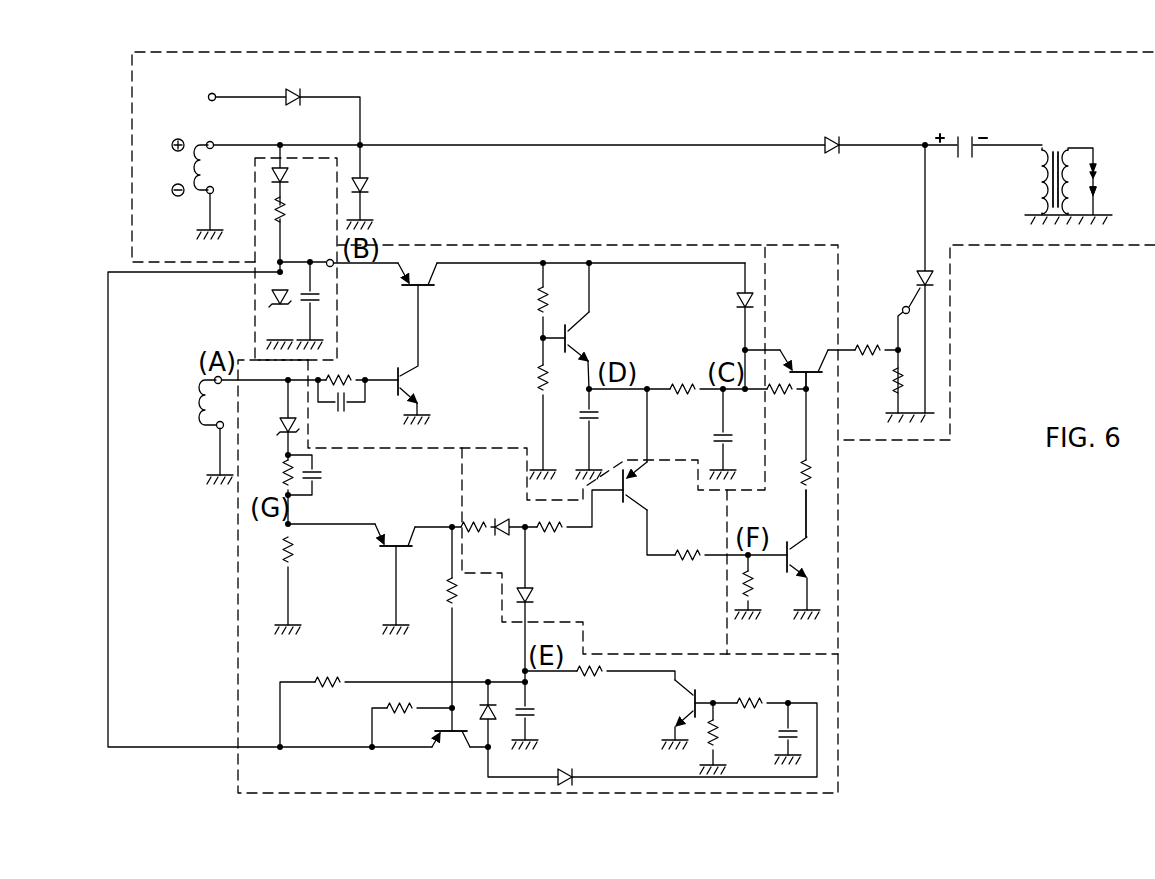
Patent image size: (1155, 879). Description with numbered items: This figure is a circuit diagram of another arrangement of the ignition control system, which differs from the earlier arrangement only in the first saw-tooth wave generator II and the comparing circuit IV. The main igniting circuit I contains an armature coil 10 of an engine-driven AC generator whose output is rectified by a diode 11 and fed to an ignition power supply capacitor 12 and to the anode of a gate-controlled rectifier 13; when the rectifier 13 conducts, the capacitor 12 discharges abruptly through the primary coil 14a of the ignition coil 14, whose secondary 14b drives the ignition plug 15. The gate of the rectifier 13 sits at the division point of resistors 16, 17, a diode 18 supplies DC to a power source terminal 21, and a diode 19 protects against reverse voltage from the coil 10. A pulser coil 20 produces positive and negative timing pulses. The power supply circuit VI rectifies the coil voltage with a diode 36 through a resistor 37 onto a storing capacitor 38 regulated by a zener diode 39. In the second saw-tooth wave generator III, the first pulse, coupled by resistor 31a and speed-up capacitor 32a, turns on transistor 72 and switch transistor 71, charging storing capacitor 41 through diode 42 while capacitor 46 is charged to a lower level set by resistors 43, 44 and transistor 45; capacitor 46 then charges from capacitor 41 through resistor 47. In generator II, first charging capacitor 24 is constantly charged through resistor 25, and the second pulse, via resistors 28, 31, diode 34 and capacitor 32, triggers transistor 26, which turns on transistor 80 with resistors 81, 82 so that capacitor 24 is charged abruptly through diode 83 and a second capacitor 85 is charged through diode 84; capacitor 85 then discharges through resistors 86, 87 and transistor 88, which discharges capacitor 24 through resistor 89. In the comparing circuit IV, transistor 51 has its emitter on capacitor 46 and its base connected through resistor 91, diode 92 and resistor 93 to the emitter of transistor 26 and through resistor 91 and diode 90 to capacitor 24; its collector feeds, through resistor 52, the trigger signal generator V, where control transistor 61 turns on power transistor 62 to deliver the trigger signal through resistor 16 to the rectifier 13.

The armature coil 10 is at (192, 170).
The diode 11 is at (833, 138).
The ignition power supply capacitor 12 is at (965, 137).
The gate-controlled rectifier 13 is at (916, 282).
The ignition coil 14 is at (1056, 152).
The primary coil 14a is at (1040, 184).
The secondary winding 14b is at (1073, 198).
The ignition plug 15 is at (1098, 186).
The resistor 16 is at (872, 344).
The resistor 17 is at (905, 383).
The diode 18 is at (290, 91).
The diode 19 is at (370, 185).
The pulser coil 20 is at (197, 406).
The power source terminal 21 is at (208, 98).
The first charging capacitor 24 is at (538, 712).
The resistor 25 is at (330, 677).
The transistor 26 is at (395, 532).
The resistor 28 is at (297, 552).
The resistor 31 is at (282, 475).
The resistor 31a is at (345, 375).
The capacitor 32 is at (322, 476).
The speed-up capacitor 32a is at (343, 412).
The diode 34 is at (280, 425).
The diode 36 is at (290, 176).
The resistor 37 is at (290, 211).
The storing capacitor 38 is at (326, 298).
The zener diode 39 is at (268, 305).
The storing capacitor 41 is at (714, 437).
The diode 42 is at (738, 300).
The resistor 43 is at (549, 302).
The resistor 44 is at (549, 386).
The transistor 45 is at (575, 338).
The capacitor 46 is at (598, 414).
The resistor 47 is at (686, 380).
The transistor 51 is at (635, 485).
The resistor 52 is at (689, 548).
The control transistor 61 is at (797, 558).
The power transistor 62 is at (806, 365).
The switch transistor 71 is at (428, 290).
The transistor 72 is at (410, 385).
The transistor 80 is at (453, 736).
The resistor 81 is at (460, 594).
The resistor 82 is at (403, 714).
The diode 83 is at (485, 700).
The diode 84 is at (565, 770).
The second capacitor 85 is at (778, 740).
The resistor 86 is at (752, 698).
The resistor 87 is at (720, 735).
The transistor 88 is at (685, 703).
The resistor 89 is at (594, 678).
The diode 90 is at (535, 595).
The resistor 91 is at (552, 537).
The diode 92 is at (503, 517).
The resistor 93 is at (476, 537).
The main igniting circuit I is at (735, 60).
The first saw-tooth wave generator II is at (235, 598).
The second saw-tooth wave generator III is at (586, 243).
The comparing circuit IV is at (650, 551).
The trigger signal generator V is at (840, 622).
The power supply circuit VI is at (253, 298).